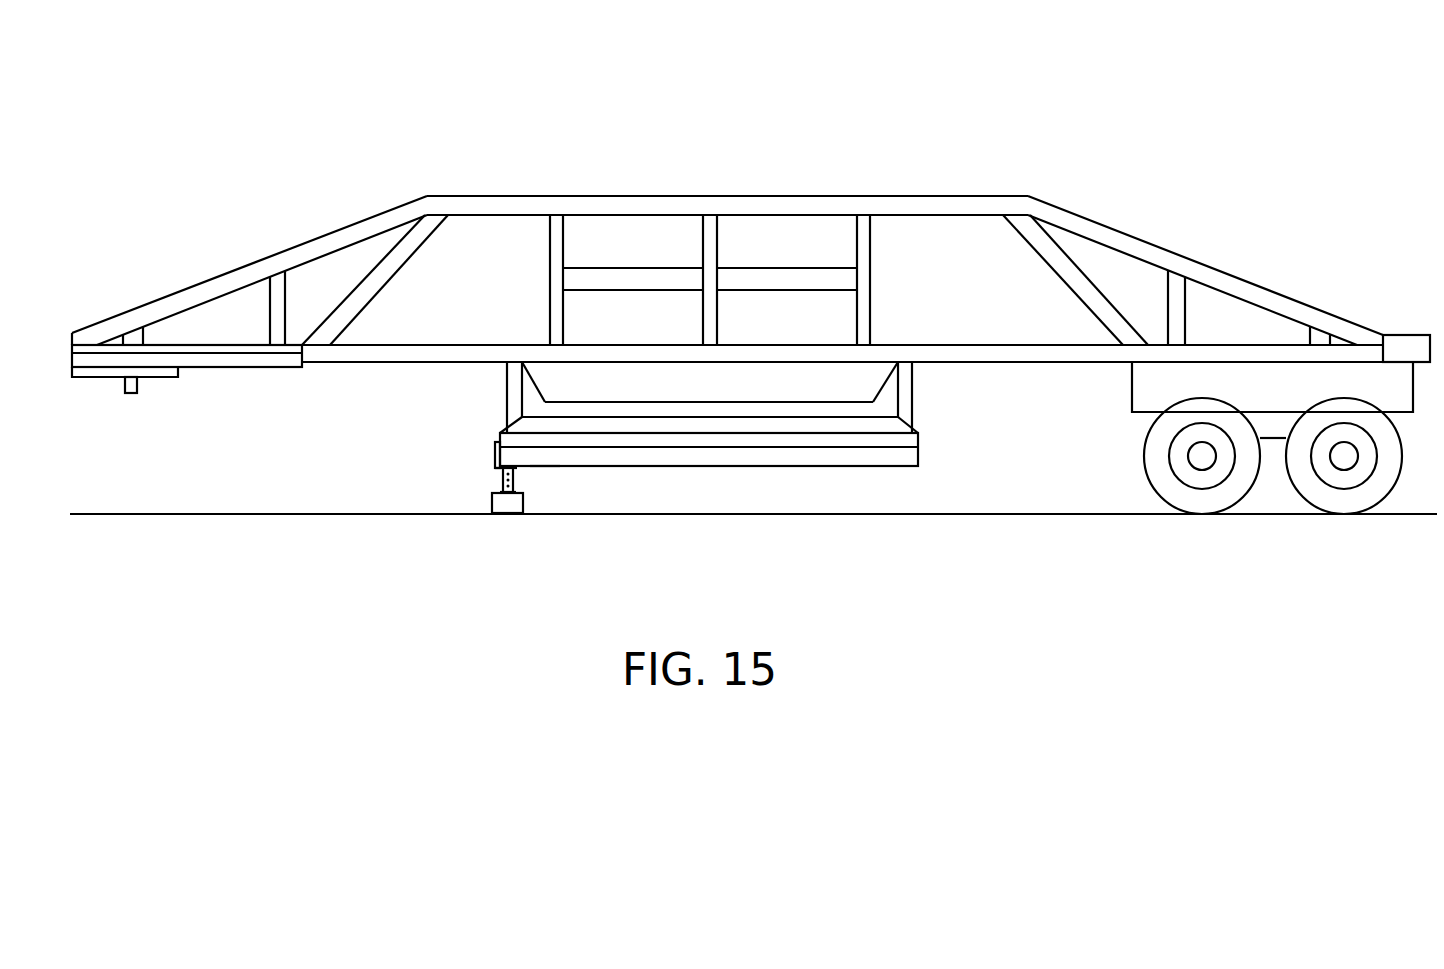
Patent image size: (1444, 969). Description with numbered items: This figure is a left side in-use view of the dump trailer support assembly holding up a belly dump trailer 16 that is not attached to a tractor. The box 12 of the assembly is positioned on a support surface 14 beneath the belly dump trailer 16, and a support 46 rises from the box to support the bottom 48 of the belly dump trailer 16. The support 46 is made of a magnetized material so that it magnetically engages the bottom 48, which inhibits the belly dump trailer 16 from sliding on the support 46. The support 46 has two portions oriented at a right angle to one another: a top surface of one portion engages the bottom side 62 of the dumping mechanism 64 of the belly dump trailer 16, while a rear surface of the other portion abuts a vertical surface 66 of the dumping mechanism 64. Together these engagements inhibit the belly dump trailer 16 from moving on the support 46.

The belly dump trailer 16 is at (768, 173).
The support surface 14 is at (319, 513).
The box 12 is at (492, 503).
The support 46 is at (495, 458).
The vertical surface 66 is at (503, 431).
The bottom 48 is at (543, 467).
The bottom side 62 is at (793, 467).
The dumping mechanism 64 is at (878, 467).